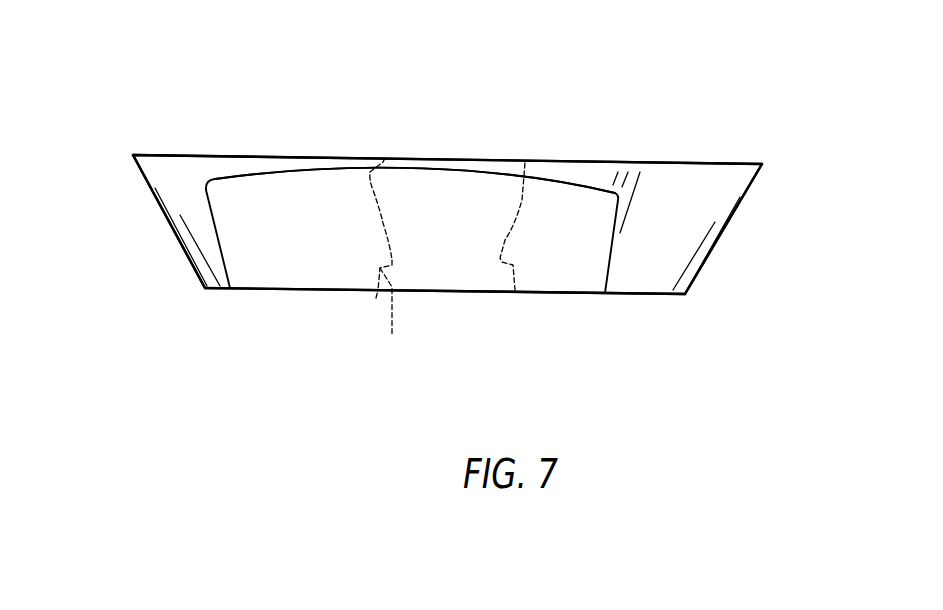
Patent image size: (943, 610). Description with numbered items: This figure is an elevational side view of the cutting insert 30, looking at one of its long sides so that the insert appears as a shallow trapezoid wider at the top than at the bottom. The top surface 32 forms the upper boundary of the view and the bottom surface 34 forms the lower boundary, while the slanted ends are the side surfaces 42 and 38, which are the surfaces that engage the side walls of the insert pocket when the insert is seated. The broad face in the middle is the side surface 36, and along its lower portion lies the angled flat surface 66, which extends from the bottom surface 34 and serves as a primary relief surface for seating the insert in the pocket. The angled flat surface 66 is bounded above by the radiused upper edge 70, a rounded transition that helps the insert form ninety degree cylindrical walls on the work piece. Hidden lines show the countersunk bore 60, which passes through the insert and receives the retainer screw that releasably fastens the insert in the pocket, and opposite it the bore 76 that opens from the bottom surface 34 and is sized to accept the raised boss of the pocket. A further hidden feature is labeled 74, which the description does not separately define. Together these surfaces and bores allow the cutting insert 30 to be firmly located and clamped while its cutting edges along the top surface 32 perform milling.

The cutting insert 30 is at (758, 84).
The top surface 32 is at (335, 150).
The bottom surface 34 is at (292, 298).
The side surface 36 is at (442, 276).
The side surface 38 is at (732, 237).
The side surface 42 is at (162, 227).
The countersunk bore 60 is at (385, 158).
The angled flat surface 66 is at (483, 265).
The radiused upper edge 70 is at (427, 163).
The hidden fold line 74 is at (376, 298).
The bore 76 is at (392, 335).